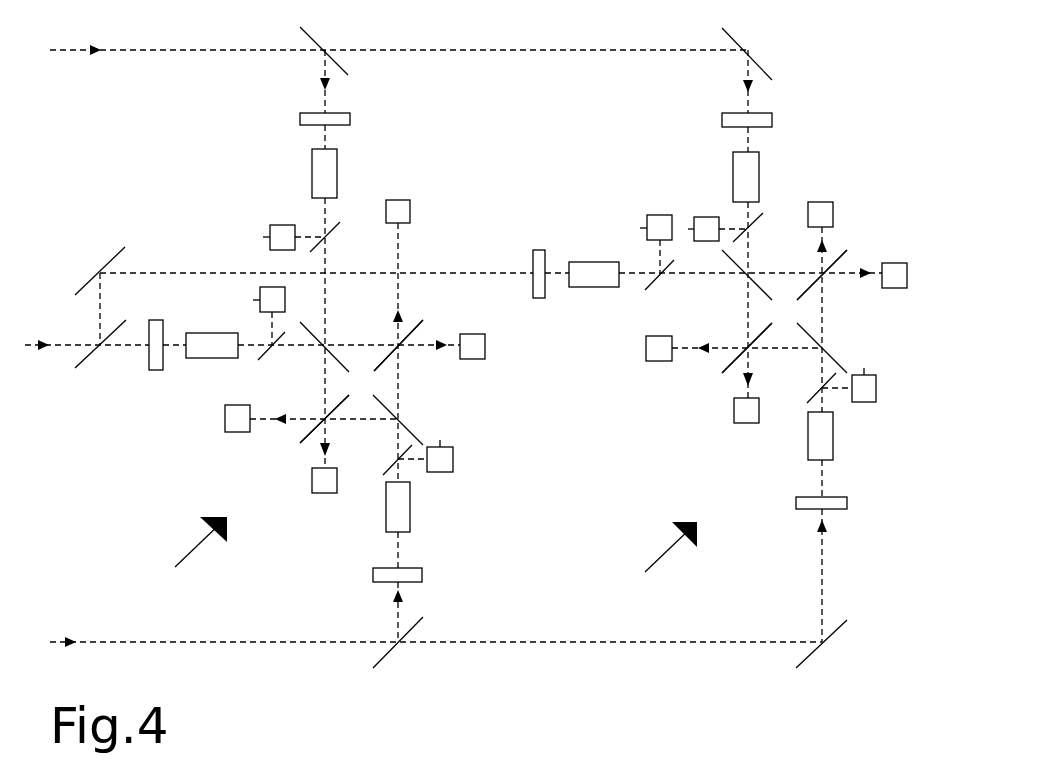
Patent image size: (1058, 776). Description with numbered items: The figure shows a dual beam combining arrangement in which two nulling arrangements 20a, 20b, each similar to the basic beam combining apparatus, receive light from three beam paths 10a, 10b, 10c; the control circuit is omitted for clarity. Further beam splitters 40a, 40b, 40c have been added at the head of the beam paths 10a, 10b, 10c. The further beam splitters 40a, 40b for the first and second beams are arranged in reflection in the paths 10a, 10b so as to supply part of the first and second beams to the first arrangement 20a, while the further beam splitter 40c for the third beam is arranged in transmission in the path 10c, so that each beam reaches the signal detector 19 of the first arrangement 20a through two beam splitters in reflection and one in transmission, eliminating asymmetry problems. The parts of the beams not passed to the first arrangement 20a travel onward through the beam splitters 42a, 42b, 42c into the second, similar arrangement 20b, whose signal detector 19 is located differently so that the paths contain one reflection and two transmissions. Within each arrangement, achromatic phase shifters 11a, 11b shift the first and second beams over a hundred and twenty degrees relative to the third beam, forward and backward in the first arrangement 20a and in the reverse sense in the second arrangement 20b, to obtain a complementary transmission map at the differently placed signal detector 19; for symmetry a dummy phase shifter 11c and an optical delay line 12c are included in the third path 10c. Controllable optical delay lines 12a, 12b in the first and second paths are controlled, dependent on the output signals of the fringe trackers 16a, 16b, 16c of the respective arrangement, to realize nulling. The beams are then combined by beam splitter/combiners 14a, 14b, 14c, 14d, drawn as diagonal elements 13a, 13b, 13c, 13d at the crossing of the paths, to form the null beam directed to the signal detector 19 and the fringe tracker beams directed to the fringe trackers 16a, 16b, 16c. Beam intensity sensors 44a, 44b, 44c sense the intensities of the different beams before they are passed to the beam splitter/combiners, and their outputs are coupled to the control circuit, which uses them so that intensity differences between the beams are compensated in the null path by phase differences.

The path of the first beam 10a is at (140, 50).
The path of the second beam 10b is at (110, 642).
The path of the third beam 10c is at (50, 345).
The achromatic phase shifter 11a is at (350, 119).
The achromatic phase shifter 11b is at (422, 575).
The dummy phase shifter 11c is at (157, 320).
The controllable optical delay line 12a is at (337, 176).
The controllable optical delay line 12b is at (410, 495).
The optical delay line 12c is at (200, 333).
The first beam splitter 13a is at (322, 385).
The second beam splitter 13b is at (352, 342).
The third beam splitter 13c is at (405, 375).
The fourth beam splitter 13d is at (362, 420).
The beam splitter/combiner 14a is at (342, 321).
The beam splitter/combiner 14b is at (420, 328).
The beam splitter/combiner 14c is at (302, 440).
The beam splitter/combiner 14d is at (417, 430).
The fringe tracker 16a is at (405, 202).
The fringe tracker 16b is at (485, 345).
The fringe tracker 16c is at (337, 490).
The signal detector 19 is at (225, 418).
The first arrangement 20a is at (188, 557).
The second arrangement 20b is at (659, 564).
The further beam splitter 40a is at (322, 45).
The further beam splitter 40b is at (395, 650).
The further beam splitter 40c is at (96, 362).
The beam splitter 42a is at (750, 50).
The beam splitter 42b is at (818, 652).
The beam splitter 42c is at (113, 262).
The beam intensity sensor 44a is at (281, 225).
The beam intensity sensor 44b is at (453, 460).
The beam intensity sensor 44c is at (272, 287).